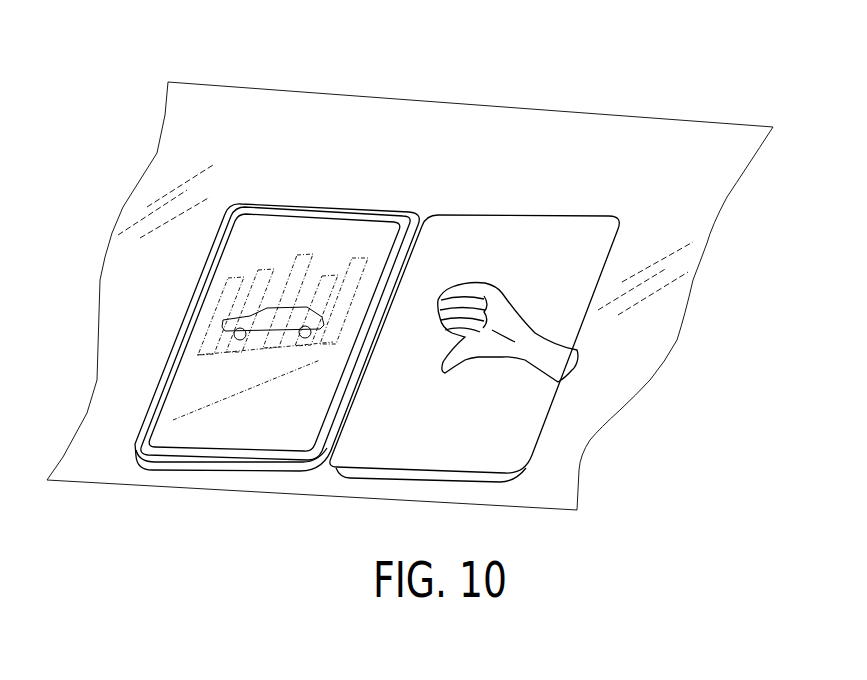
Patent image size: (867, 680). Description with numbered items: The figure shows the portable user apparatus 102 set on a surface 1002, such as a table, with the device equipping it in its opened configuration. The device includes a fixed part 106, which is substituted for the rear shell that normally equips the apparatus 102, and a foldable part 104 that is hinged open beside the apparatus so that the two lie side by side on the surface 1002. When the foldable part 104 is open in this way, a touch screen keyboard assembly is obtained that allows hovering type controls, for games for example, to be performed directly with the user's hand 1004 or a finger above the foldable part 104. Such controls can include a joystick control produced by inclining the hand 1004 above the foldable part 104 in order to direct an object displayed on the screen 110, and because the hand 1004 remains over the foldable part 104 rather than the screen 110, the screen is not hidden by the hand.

The apparatus 102 is at (343, 257).
The foldable part 104 is at (503, 213).
The fixed part 106 is at (278, 200).
The screen 110 is at (243, 243).
The surface 1002 is at (397, 100).
The user's hand 1004 is at (572, 358).